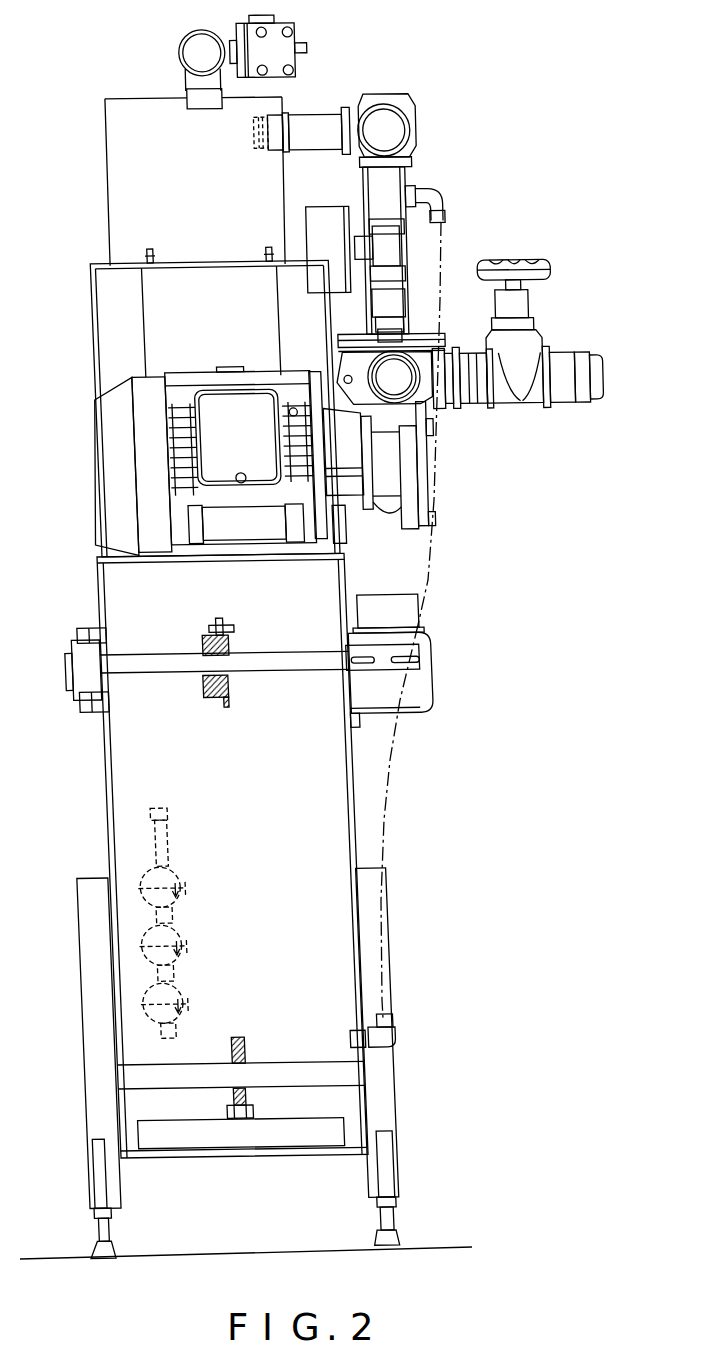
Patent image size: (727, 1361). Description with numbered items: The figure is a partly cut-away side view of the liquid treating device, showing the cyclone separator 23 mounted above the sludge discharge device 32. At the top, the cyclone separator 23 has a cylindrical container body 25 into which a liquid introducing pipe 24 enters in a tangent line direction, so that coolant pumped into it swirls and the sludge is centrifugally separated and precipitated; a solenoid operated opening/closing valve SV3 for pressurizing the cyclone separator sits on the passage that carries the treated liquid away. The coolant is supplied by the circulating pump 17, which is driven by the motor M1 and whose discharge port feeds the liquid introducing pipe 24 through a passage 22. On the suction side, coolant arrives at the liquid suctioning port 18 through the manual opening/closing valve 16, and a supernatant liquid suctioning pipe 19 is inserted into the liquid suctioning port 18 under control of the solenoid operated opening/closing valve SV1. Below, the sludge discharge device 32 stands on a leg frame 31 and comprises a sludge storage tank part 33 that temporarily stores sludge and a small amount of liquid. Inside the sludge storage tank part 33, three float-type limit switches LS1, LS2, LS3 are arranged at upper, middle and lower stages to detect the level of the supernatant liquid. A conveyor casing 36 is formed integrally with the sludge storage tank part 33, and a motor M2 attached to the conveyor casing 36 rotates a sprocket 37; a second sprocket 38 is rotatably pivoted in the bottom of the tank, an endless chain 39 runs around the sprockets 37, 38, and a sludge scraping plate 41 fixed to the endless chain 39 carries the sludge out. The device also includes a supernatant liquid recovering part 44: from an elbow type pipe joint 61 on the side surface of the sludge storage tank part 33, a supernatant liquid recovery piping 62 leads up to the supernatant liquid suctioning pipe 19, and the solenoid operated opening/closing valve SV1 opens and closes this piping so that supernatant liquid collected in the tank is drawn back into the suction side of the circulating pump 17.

The manual opening/closing valve 16 is at (517, 388).
The circulating pump 17 is at (419, 490).
The liquid suctioning port 18 is at (405, 414).
The supernatant liquid suctioning pipe 19 is at (407, 335).
The passage 22 is at (386, 130).
The cyclone separator 23 is at (291, 100).
The liquid introducing pipe 24 is at (273, 150).
The cylindrical container body 25 is at (123, 144).
The leg frame 31 is at (385, 1100).
The sludge discharge device 32 is at (356, 830).
The sludge storage tank part 33 is at (287, 1150).
The conveyor casing 36 is at (346, 588).
The sprocket 37 is at (230, 703).
The sprocket 38 is at (247, 1057).
The endless chain 39 is at (255, 1111).
The sludge scraping plate 41 is at (240, 1137).
The supernatant liquid recovering part 44 is at (436, 567).
The elbow type pipe joint 61 is at (396, 1045).
The supernatant liquid recovery piping 62 is at (389, 763).
The solenoid operated opening/closing valve SV1 is at (395, 249).
The solenoid operated opening/closing valve SV3 is at (306, 32).
The motor M1 is at (147, 447).
The motor M2 is at (415, 720).
The limit switch LS1 is at (185, 892).
The limit switch LS2 is at (186, 950).
The limit switch LS3 is at (188, 1008).